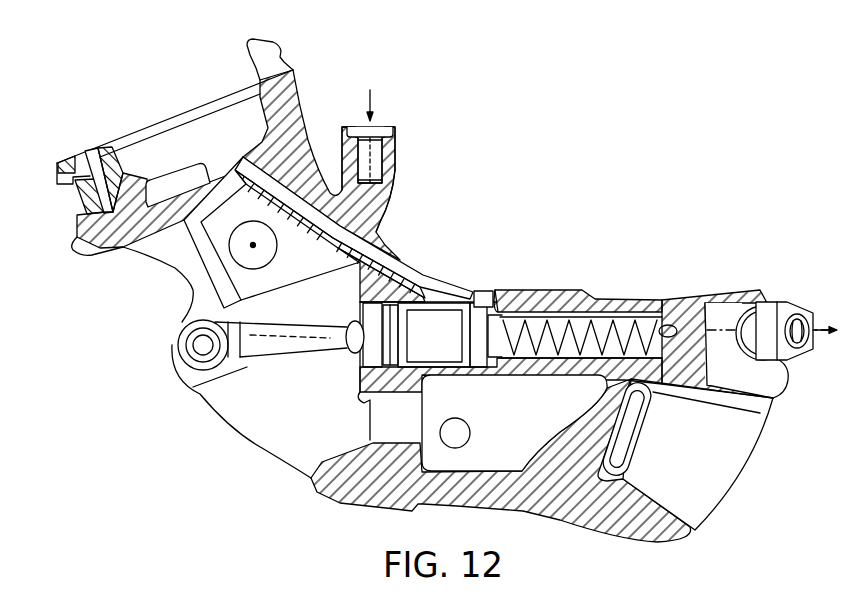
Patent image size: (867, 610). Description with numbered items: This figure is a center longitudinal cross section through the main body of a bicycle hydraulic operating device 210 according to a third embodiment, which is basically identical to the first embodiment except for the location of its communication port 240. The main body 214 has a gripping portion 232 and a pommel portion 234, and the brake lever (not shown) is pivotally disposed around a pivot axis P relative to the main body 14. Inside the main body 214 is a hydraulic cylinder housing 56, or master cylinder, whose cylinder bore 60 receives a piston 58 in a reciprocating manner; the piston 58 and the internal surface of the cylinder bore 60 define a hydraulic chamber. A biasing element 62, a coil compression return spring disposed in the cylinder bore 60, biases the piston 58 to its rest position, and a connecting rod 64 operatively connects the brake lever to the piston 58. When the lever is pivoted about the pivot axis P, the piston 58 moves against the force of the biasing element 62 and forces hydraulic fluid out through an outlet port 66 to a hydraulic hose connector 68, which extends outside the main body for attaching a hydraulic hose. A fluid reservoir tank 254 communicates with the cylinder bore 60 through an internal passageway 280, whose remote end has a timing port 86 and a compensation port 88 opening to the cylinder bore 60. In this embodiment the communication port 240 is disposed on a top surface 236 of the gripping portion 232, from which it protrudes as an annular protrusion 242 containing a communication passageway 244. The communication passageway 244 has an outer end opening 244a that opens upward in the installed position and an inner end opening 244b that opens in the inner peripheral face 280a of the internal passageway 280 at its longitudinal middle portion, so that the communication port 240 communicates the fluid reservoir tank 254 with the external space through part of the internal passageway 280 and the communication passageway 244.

The main body 14 is at (549, 532).
The hydraulic cylinder housing 56 is at (617, 278).
The piston 58 is at (440, 348).
The cylinder bore 60 is at (516, 355).
The biasing element 62 is at (597, 352).
The connecting rod 64 is at (317, 340).
The outlet port 66 is at (716, 323).
The hydraulic hose connector 68 is at (776, 302).
The timing port 86 is at (498, 291).
The compensation port 88 is at (480, 291).
The bicycle hydraulic operating device 210 is at (610, 100).
The main body 214 is at (561, 253).
The gripping portion 232 is at (398, 228).
The pommel portion 234 is at (321, 78).
The top surface 236 is at (410, 262).
The communication port 240 is at (416, 152).
The annular protrusion 242 is at (398, 168).
The communication passageway 244 is at (382, 152).
The outer end opening 244a is at (383, 123).
The inner end opening 244b is at (322, 240).
The fluid reservoir tank 254 is at (155, 76).
The internal passageway 280 is at (415, 273).
The inner peripheral face 280a is at (358, 302).
The pivot axis P is at (255, 246).